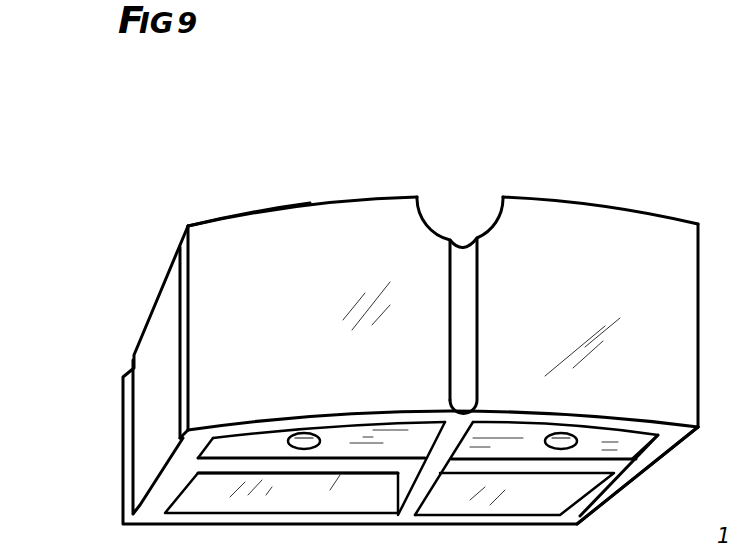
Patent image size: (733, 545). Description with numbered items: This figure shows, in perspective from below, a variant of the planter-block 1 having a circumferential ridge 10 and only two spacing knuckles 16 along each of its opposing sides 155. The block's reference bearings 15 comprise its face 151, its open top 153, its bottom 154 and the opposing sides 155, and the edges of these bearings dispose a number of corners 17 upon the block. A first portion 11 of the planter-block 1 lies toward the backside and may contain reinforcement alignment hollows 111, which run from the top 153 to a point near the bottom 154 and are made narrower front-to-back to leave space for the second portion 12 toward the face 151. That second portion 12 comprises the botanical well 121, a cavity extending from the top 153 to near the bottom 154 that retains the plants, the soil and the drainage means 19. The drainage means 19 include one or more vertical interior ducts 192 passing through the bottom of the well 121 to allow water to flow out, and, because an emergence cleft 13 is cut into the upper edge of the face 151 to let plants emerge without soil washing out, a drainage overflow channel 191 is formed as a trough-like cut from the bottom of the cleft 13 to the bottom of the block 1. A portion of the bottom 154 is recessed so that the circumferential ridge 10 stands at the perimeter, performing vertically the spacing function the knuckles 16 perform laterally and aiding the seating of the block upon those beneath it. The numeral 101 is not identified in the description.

The planter-block 1 is at (678, 90).
The circumferential ridge 10 is at (248, 443).
The first portion 11 is at (175, 483).
The reinforcement alignment hollows 111 is at (215, 483).
The second portion 12 is at (282, 443).
The botanical well 121 is at (232, 215).
The emergence cleft 13 is at (480, 227).
The reference bearings 15 is at (662, 152).
The face 151 is at (527, 237).
The open top 153 is at (558, 199).
The bottom 154 is at (632, 443).
The opposing sides 155 is at (697, 320).
The spacing knuckles 16 is at (178, 248).
The corners 17 is at (698, 223).
The drainage means 19 is at (378, 147).
The drainage overflow channel 191 is at (463, 313).
The vertical interior ducts 192 is at (305, 437).
The housing 101 is at (669, 534).